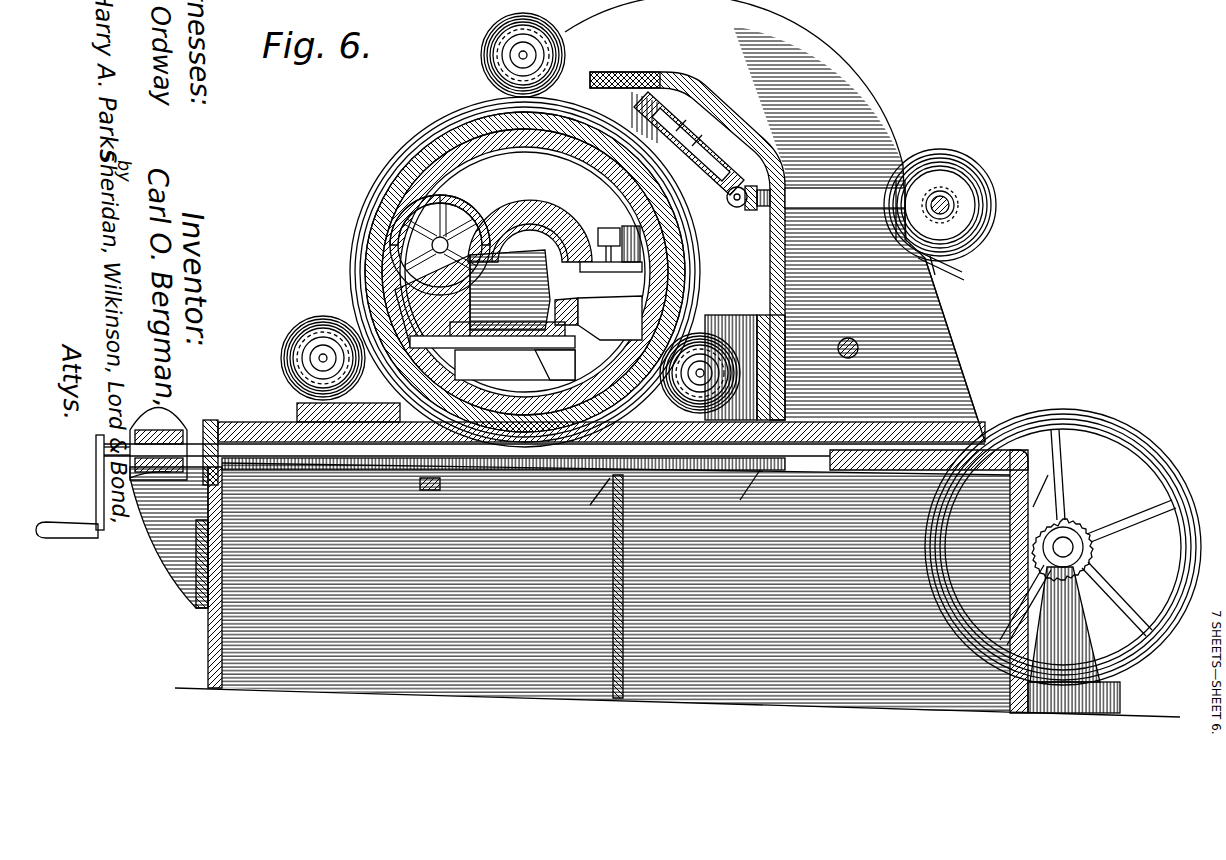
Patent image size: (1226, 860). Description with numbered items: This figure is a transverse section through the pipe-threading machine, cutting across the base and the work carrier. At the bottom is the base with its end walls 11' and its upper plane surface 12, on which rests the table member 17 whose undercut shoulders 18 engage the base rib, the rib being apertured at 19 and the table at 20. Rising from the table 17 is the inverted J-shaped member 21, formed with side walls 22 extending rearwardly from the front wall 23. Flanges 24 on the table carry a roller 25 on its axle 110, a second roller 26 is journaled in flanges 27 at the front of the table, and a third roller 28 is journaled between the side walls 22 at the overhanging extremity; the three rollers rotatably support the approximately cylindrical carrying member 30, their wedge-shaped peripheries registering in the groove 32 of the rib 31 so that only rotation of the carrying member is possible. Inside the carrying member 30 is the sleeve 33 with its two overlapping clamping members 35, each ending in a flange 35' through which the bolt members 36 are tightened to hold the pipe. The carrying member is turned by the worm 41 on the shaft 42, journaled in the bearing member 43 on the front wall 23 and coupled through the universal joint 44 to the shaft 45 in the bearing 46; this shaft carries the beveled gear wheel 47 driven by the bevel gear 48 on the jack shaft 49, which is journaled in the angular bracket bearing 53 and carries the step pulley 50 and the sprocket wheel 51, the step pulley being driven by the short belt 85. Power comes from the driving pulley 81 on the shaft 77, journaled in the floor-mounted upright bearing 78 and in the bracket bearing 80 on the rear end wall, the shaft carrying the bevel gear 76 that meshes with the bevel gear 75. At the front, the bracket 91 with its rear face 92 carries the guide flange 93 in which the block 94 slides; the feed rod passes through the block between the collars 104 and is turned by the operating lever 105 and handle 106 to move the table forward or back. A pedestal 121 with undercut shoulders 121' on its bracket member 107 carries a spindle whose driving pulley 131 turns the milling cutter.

The end wall 11' is at (192, 577).
The upper plane surface 12 is at (1012, 690).
The base bracket 107 is at (757, 499).
The table member 17 is at (940, 430).
The undercut shoulders 18 is at (595, 596).
The aperture 19 is at (566, 452).
The aperture 20 is at (420, 430).
The inverted J-shaped member 21 is at (968, 300).
The side walls 22 is at (868, 148).
The front wall 23 is at (716, 112).
The flanges 24 is at (718, 316).
The roller 25 is at (762, 322).
The second roller 26 is at (284, 338).
The flanges 27 is at (297, 400).
The third roller 28 is at (480, 48).
The carrying member 30 is at (503, 272).
The rib 31 is at (366, 152).
The groove 32 is at (408, 128).
The sleeve 33 is at (525, 272).
The clamping members 35 is at (440, 231).
The flange 35' is at (464, 241).
The bolt members 36 is at (585, 212).
The worm 41 is at (650, 96).
The shaft 42 is at (742, 152).
The bearing member 43 is at (690, 100).
The universal joint 44 is at (732, 207).
The shaft 45 is at (757, 212).
The bearing 46 is at (845, 198).
The beveled gear wheel 47 is at (955, 160).
The bevel gear 48 is at (956, 190).
The jack shaft 49 is at (950, 205).
The step pulley 50 is at (990, 230).
The sprocket wheel 51 is at (857, 341).
The angular bracket bearing 53 is at (966, 270).
The short belt 85 is at (965, 280).
The bevel gear 75 is at (1068, 500).
The bevel gear 76 is at (1080, 520).
The shaft 77 is at (1075, 546).
The upright bearing 78 is at (1088, 600).
The bracket bearing 80 is at (1090, 556).
The driving pulley 81 is at (1088, 412).
The bracket 91 is at (180, 514).
The rear face 92 is at (198, 572).
The guide flange 93 is at (210, 420).
The block 94 is at (140, 478).
The collars 104 is at (157, 408).
The operating lever 105 is at (105, 530).
The handle 106 is at (50, 538).
The axle 110 is at (615, 340).
The pedestal 121 is at (480, 297).
The undercut shoulders 121' is at (547, 358).
The driving pulley 131 is at (488, 200).